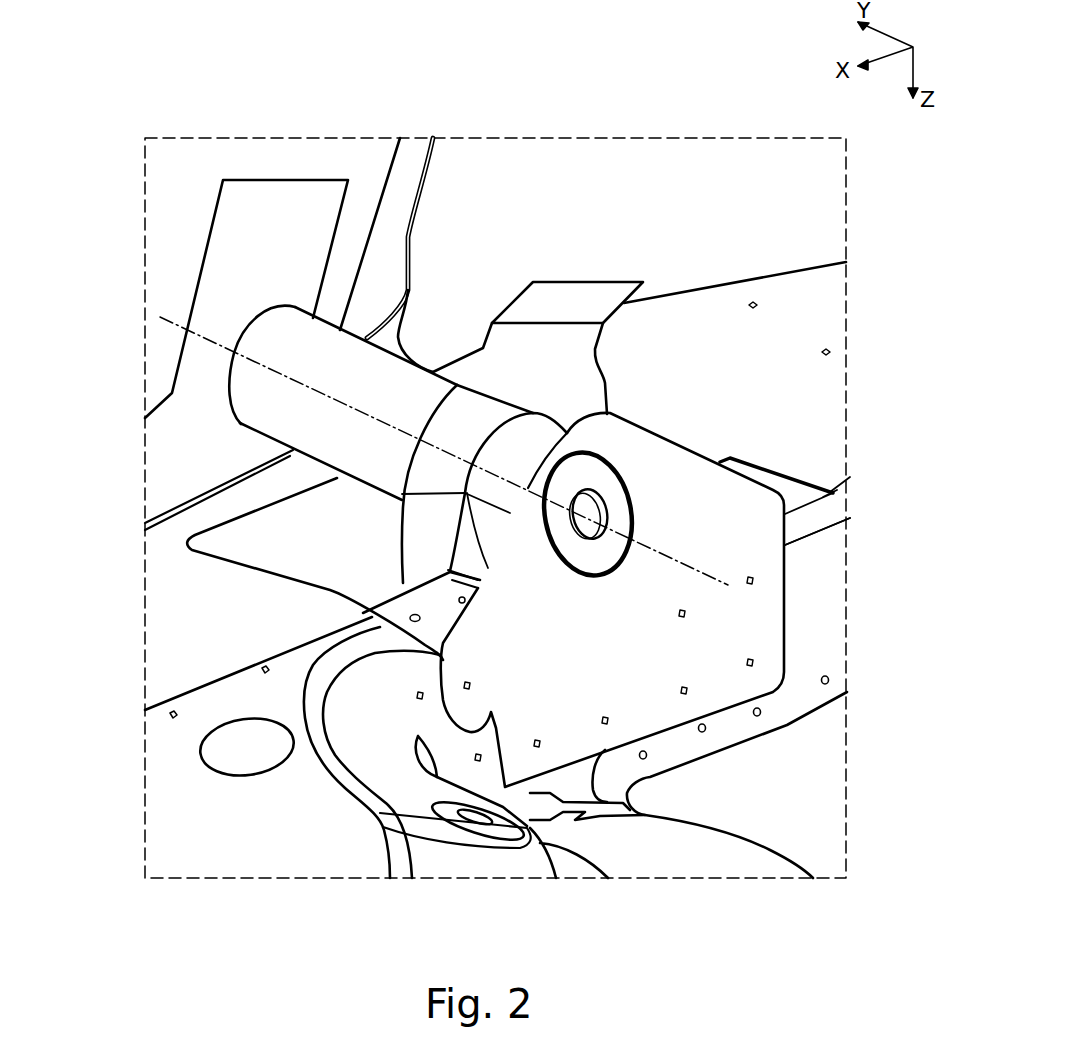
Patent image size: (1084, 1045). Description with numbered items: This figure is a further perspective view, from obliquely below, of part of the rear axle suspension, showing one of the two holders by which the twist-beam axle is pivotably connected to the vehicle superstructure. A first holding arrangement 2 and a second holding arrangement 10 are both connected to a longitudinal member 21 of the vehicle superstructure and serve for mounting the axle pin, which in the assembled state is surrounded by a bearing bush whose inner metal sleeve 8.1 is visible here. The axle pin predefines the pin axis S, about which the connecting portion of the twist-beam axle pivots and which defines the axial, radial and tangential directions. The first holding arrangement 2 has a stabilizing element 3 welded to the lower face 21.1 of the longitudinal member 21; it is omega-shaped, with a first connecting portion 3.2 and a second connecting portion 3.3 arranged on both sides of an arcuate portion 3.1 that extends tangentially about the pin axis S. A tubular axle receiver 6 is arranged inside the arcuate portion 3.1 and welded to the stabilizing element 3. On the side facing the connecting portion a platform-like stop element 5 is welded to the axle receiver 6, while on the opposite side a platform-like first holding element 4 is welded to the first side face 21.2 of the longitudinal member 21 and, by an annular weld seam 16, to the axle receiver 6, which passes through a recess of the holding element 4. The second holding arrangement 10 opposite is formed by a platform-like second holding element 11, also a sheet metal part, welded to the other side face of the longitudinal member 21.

The second holding arrangement 10 is at (124, 197).
The pin axis S is at (160, 317).
The second holding element 11 is at (198, 367).
The inner metal sleeve 8.1 is at (258, 424).
The stop element 5 is at (540, 303).
The first holding arrangement 2 is at (697, 333).
The longitudinal member 21 is at (833, 320).
The stabilizing element 3 is at (498, 634).
The arcuate portion 3.1 is at (262, 634).
The first connecting portion 3.2 is at (446, 610).
The second connecting portion 3.3 is at (760, 471).
The first holding element 4 is at (673, 458).
The annular weld seam 16 is at (630, 503).
The axle receiver 6 is at (597, 552).
The lower face 21.1 is at (456, 537).
The first side face 21.2 is at (795, 621).